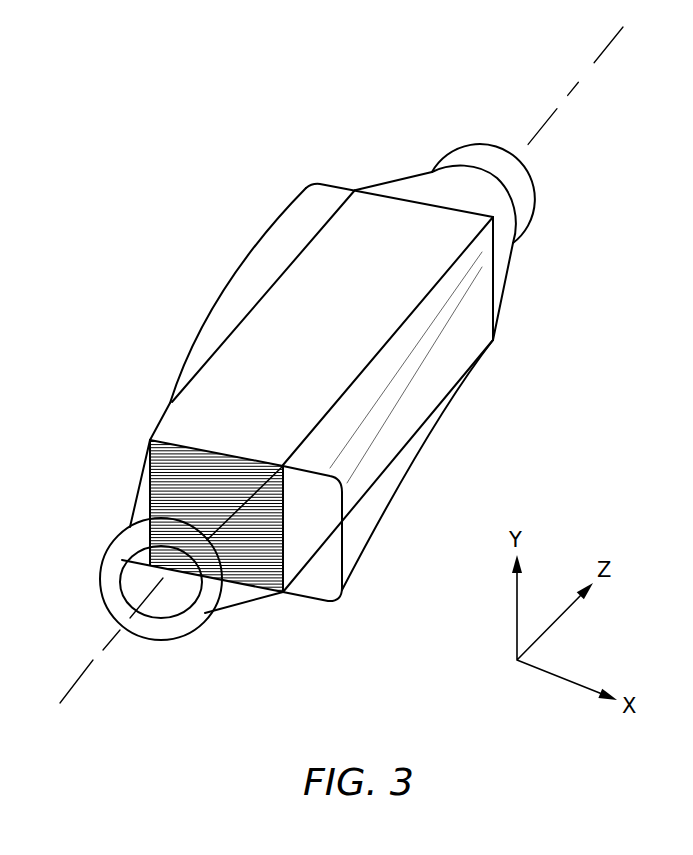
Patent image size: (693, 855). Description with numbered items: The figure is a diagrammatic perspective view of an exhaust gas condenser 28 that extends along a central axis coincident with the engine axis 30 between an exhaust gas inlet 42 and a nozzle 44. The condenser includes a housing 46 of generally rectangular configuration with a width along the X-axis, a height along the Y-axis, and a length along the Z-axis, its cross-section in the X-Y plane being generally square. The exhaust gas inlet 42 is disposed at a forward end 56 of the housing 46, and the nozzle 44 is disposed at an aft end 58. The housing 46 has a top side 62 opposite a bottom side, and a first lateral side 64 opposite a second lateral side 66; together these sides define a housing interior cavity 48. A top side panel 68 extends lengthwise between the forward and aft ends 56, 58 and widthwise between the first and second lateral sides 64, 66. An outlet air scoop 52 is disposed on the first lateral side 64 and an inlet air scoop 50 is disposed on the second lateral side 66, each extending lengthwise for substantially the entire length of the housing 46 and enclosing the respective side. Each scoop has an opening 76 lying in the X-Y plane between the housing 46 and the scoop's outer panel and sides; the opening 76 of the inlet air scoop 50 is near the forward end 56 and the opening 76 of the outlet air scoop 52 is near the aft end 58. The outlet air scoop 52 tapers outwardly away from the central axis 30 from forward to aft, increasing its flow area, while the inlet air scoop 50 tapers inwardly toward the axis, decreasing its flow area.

The exhaust gas condenser 28 is at (162, 148).
The engine axis 30 is at (595, 63).
The exhaust gas inlet 42 is at (175, 678).
The nozzle 44 is at (557, 248).
The housing 46 is at (525, 336).
The housing interior cavity 48 is at (173, 478).
The inlet air scoop 50 is at (387, 584).
The outlet air scoop 52 is at (282, 169).
The forward end 56 is at (283, 594).
The aft end 58 is at (347, 187).
The top side 62 is at (373, 195).
The first lateral side 64 is at (160, 425).
The second lateral side 66 is at (475, 363).
The top side panel 68 is at (403, 223).
The opening 76 is at (323, 185).